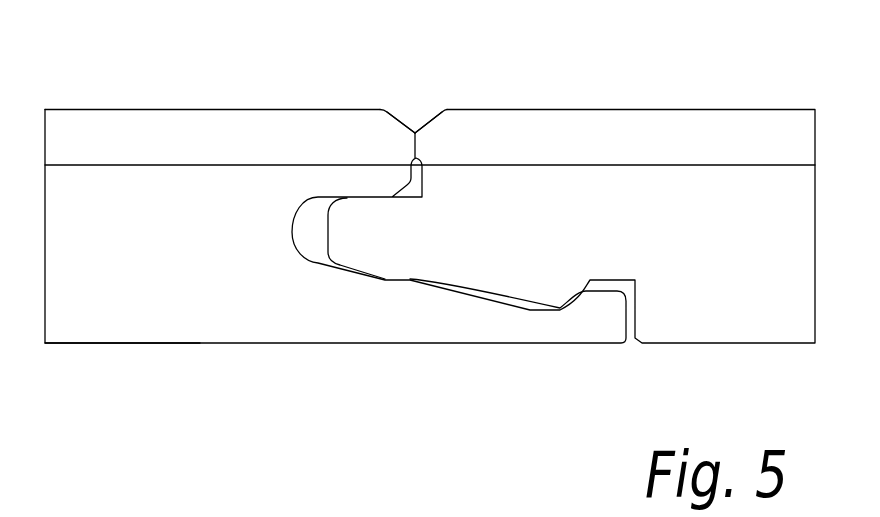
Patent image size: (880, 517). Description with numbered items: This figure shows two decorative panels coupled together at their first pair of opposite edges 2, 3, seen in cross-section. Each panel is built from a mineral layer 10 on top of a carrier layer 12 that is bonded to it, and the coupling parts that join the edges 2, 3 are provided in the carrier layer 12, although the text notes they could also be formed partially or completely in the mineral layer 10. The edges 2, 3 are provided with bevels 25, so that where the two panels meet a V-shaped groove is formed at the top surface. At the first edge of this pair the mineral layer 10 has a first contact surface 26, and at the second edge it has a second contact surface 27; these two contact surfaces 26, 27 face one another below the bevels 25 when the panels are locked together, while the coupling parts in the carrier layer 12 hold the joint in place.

The first edge 2 is at (518, 50).
The second edge 3 is at (310, 63).
The mineral layer 10 is at (187, 145).
The carrier layer 12 is at (202, 275).
The bevel 25 is at (432, 118).
The first contact surface 26 is at (418, 143).
The second contact surface 27 is at (413, 146).